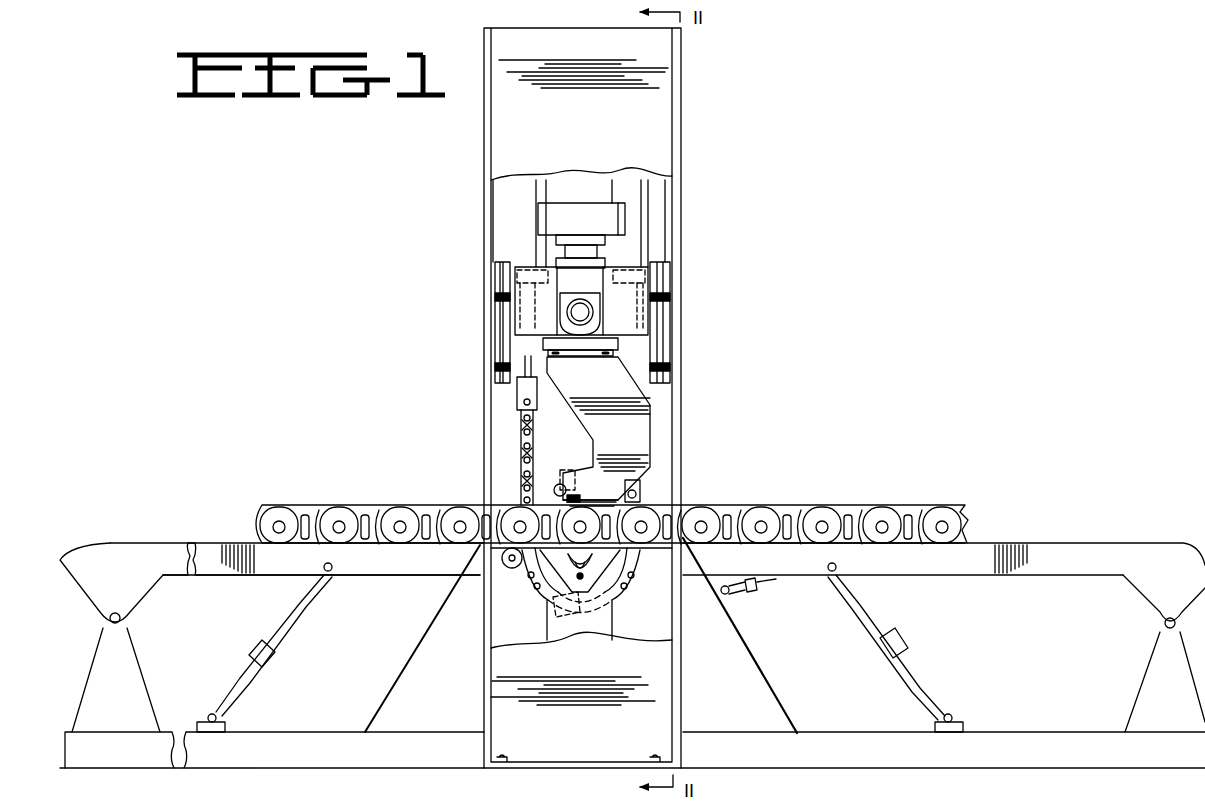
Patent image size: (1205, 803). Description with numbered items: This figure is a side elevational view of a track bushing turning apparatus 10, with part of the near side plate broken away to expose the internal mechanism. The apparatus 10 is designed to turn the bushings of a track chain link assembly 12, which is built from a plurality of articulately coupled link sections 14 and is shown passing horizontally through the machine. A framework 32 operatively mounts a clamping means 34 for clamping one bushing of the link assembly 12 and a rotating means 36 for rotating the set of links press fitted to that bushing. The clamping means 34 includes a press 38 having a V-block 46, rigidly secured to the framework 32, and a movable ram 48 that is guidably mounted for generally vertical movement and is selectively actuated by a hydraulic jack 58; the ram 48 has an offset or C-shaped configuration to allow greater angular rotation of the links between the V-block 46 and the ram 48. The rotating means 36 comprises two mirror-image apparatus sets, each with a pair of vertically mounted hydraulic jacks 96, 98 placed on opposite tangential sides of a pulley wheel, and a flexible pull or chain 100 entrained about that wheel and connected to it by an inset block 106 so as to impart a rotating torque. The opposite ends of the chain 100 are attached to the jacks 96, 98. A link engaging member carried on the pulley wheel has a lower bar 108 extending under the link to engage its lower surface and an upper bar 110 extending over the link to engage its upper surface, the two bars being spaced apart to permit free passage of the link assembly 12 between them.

The apparatus 10 is at (733, 257).
The track chain link assembly 12 is at (612, 492).
The link section 14 is at (418, 504).
The framework 32 is at (482, 129).
The clamping means 34 is at (550, 570).
The rotating means 36 is at (505, 572).
The press 38 is at (657, 440).
The V-block 46 is at (605, 620).
The movable ram 48 is at (598, 388).
The hydraulic jack 58 is at (555, 192).
The hydraulic jack 96 is at (515, 236).
The hydraulic jack 98 is at (650, 235).
The chain 100 is at (520, 422).
The inset block 106 is at (570, 618).
The bar 108 is at (500, 554).
The bar 110 is at (575, 490).